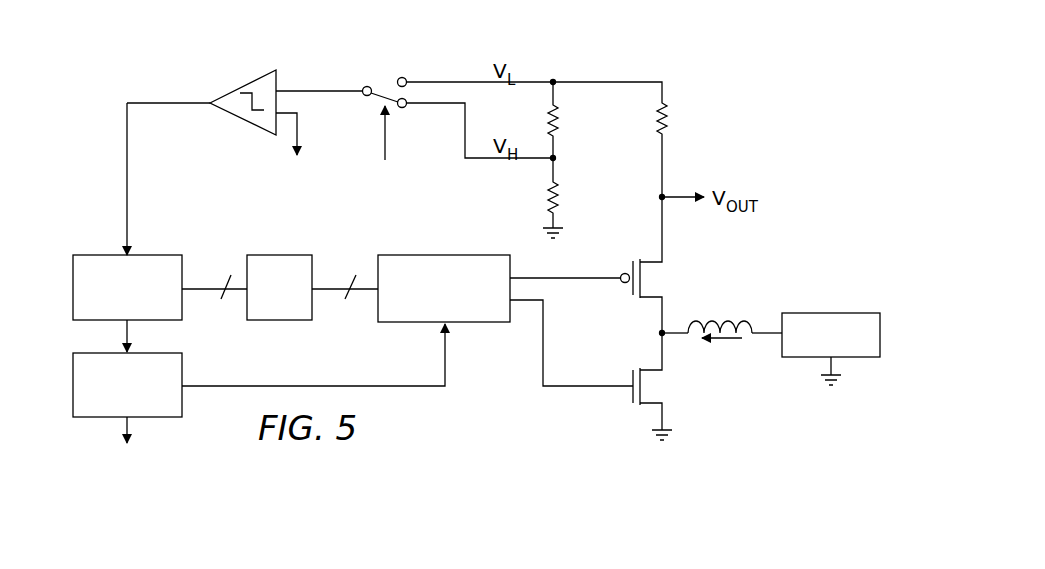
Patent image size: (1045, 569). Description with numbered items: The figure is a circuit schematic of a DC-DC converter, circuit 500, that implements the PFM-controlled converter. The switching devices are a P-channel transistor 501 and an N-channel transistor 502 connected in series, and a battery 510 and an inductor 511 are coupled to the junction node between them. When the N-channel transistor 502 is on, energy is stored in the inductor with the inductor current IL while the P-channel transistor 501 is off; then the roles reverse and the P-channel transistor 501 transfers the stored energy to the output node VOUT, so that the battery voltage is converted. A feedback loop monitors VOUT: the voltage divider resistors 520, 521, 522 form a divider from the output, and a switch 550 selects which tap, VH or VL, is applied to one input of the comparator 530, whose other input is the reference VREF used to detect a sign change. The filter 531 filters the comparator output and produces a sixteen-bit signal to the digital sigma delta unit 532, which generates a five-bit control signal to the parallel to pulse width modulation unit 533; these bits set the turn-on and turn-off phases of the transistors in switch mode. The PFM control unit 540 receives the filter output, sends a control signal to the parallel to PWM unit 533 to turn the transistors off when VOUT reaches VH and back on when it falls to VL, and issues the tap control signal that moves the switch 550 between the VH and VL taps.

The circuit 500 is at (758, 70).
The comparator 530 is at (244, 82).
The switch 550 is at (381, 81).
The voltage divider resistor 521 is at (563, 122).
The voltage divider resistor 522 is at (563, 204).
The voltage divider resistor 520 is at (670, 123).
The filter 531 is at (73, 300).
The sigma delta unit 532 is at (268, 255).
The parallel to pulse width modulation unit 533 is at (471, 322).
The PFM control unit 540 is at (73, 397).
The P-channel transistor 501 is at (628, 291).
The N-channel transistor 502 is at (628, 401).
The inductor 511 is at (731, 317).
The battery 510 is at (842, 313).